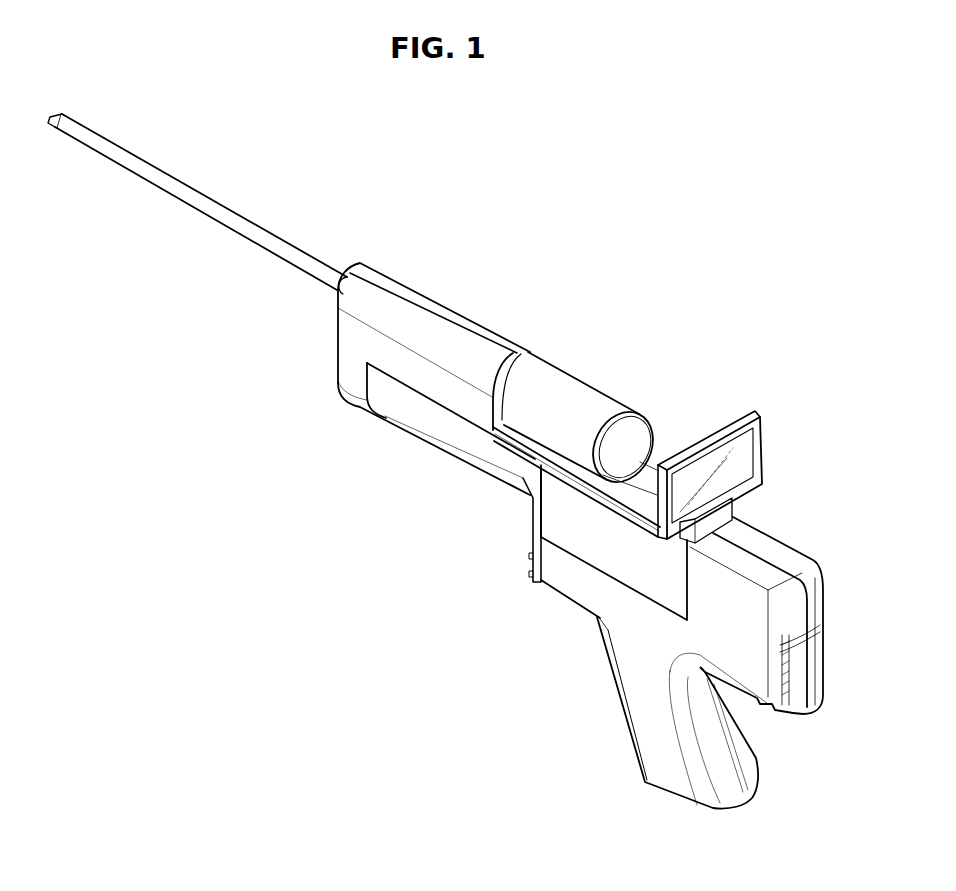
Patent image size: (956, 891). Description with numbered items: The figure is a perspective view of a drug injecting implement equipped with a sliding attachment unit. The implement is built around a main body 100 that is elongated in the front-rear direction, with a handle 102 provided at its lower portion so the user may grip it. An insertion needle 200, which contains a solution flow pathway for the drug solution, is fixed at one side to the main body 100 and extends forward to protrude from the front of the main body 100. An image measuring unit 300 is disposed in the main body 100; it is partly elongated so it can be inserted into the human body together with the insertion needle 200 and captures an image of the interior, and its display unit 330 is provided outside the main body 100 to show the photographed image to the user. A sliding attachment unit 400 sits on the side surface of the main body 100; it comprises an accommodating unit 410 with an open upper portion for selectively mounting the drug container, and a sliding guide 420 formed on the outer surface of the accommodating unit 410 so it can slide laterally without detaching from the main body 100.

The main body 100 is at (448, 325).
The handle 102 is at (646, 710).
The insertion needle 200 is at (236, 218).
The image measuring unit 300 is at (580, 395).
The display unit 330 is at (743, 417).
The sliding attachment unit 400 is at (554, 491).
The accommodating unit 410 is at (453, 428).
The sliding guide 420 is at (531, 563).